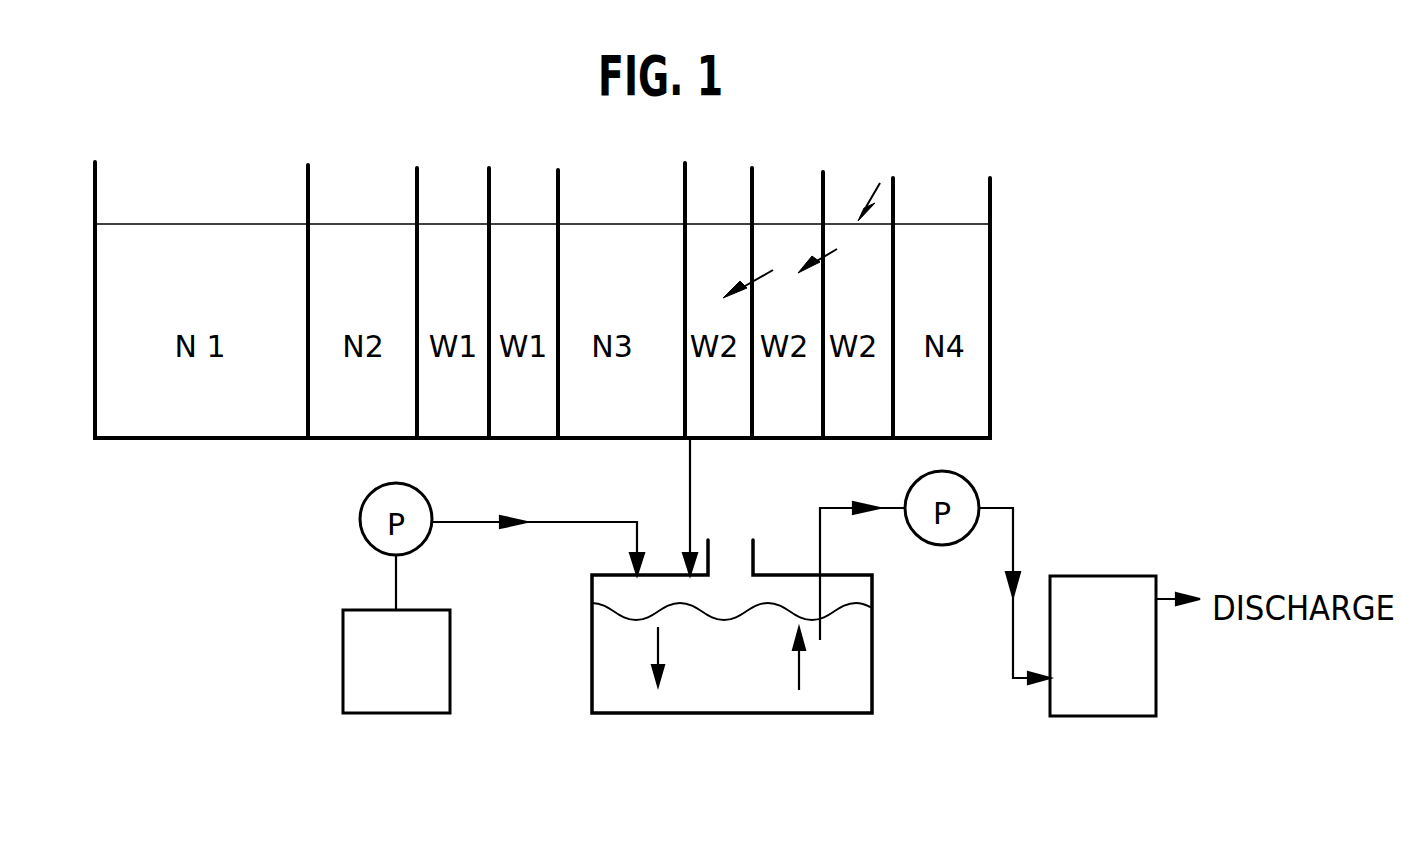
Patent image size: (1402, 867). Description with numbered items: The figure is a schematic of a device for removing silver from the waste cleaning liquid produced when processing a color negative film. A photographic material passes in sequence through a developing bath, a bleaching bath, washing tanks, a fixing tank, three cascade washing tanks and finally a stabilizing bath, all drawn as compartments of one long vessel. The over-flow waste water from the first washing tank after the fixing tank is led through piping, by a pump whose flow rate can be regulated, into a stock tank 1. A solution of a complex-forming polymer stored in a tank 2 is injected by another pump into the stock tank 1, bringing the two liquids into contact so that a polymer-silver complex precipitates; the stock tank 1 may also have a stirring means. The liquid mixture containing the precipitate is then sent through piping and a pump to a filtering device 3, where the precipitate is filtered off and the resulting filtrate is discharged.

The stock tank 1 is at (735, 714).
The tank 2 is at (343, 680).
The filtering device 3 is at (1068, 716).